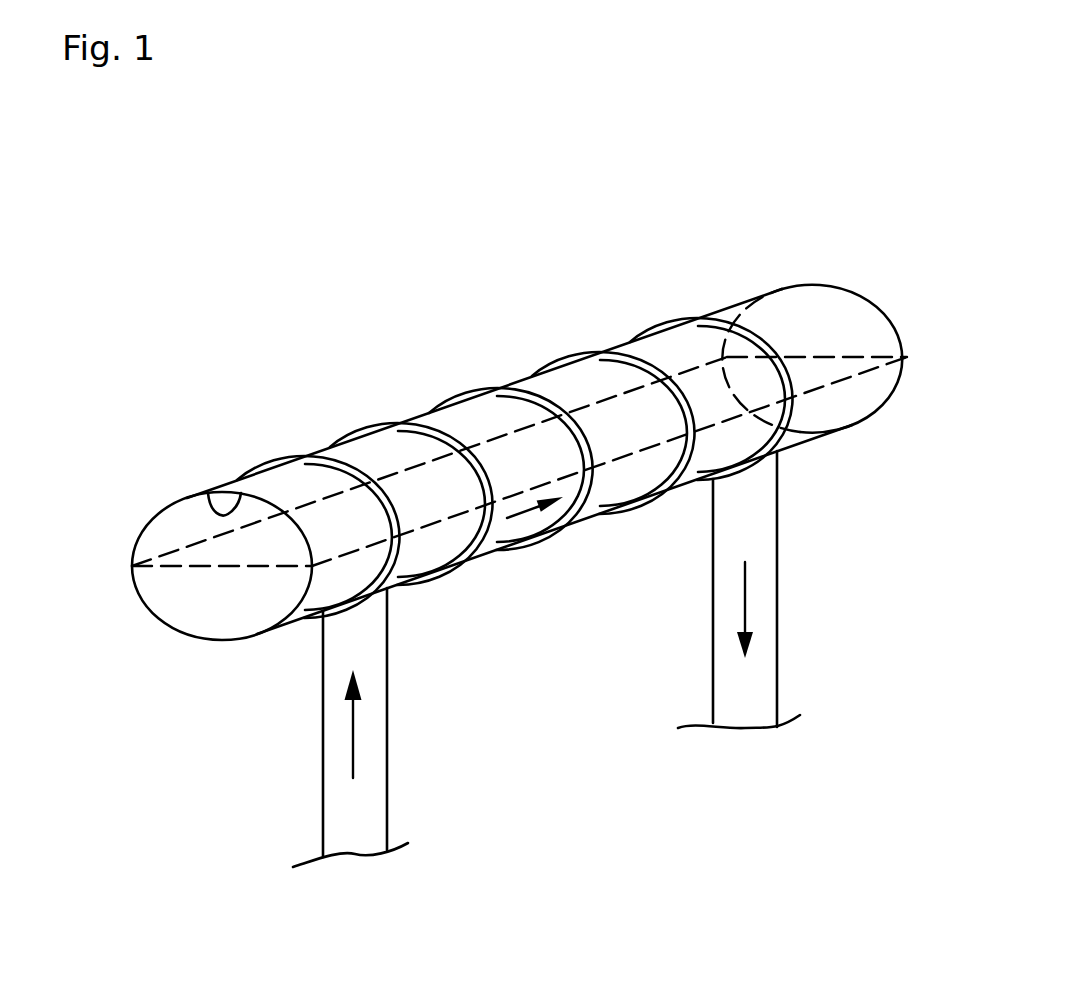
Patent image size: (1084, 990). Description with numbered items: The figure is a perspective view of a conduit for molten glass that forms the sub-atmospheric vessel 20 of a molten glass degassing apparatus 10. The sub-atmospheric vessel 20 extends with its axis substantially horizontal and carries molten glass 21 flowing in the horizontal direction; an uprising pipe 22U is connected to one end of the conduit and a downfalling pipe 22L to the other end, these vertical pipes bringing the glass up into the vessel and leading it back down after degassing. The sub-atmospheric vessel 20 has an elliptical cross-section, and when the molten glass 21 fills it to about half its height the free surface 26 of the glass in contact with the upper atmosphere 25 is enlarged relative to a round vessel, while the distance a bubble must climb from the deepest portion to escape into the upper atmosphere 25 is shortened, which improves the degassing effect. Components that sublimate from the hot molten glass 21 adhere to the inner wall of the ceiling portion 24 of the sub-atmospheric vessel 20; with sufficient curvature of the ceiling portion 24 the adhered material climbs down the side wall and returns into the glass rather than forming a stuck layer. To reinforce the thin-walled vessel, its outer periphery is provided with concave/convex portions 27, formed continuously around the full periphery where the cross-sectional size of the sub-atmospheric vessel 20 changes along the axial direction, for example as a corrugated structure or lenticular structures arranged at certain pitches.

The molten glass degassing apparatus 10 is at (422, 272).
The sub-atmospheric vessel 20 is at (597, 320).
The molten glass 21 is at (213, 604).
The uprising pipe 22U is at (340, 803).
The downfalling pipe 22L is at (768, 605).
The ceiling portion 24 is at (208, 490).
The upper atmosphere 25 is at (503, 413).
The free surface 26 is at (823, 360).
The concave/convex portions 27 is at (660, 367).